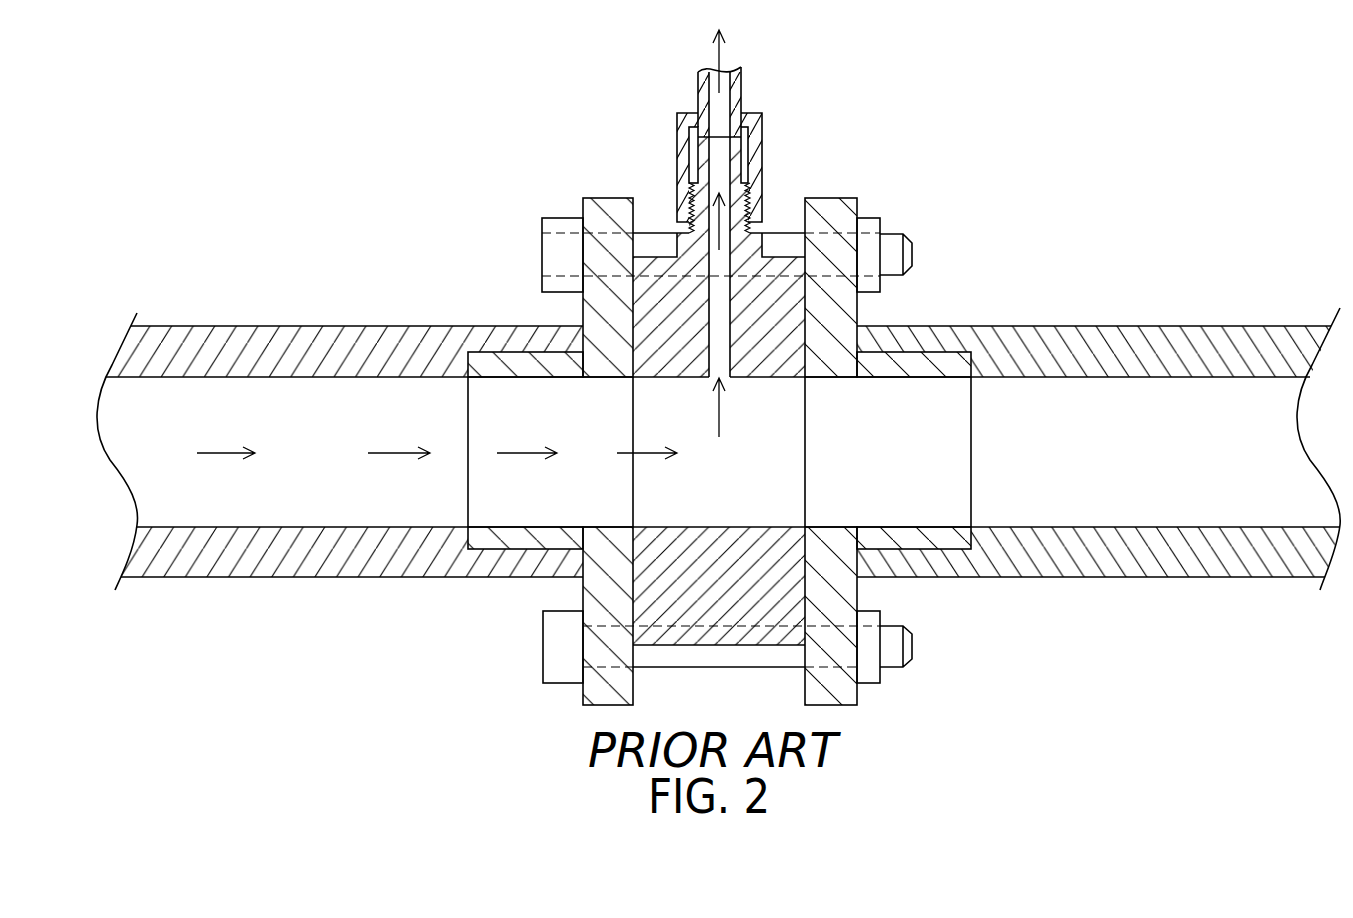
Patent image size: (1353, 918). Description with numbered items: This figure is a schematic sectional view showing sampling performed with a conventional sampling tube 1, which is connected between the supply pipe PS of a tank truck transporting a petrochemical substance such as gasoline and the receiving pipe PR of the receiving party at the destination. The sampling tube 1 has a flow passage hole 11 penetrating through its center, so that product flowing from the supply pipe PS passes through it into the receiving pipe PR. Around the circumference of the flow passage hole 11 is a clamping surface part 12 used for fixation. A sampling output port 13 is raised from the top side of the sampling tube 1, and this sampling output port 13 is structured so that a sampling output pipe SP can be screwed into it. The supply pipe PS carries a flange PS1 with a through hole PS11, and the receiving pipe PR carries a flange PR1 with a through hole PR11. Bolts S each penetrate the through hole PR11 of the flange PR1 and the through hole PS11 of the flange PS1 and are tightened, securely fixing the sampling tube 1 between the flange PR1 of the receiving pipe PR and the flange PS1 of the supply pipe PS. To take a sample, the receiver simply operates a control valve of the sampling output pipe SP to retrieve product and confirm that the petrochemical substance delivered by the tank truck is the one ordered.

The sampling tube 1 is at (782, 198).
The flow passage hole 11 is at (635, 587).
The clamping surface part 12 is at (695, 527).
The sampling output port 13 is at (690, 204).
The sampling output pipe SP is at (685, 127).
The bolt S is at (568, 227).
The supply pipe PS is at (353, 347).
The flange of the supply pipe PS1 is at (615, 198).
The through hole of the supply pipe flange PS11 is at (592, 247).
The receiving pipe PR is at (1087, 340).
The flange of the receiving pipe PR1 is at (828, 199).
The through hole of the receiving pipe flange PR11 is at (912, 257).